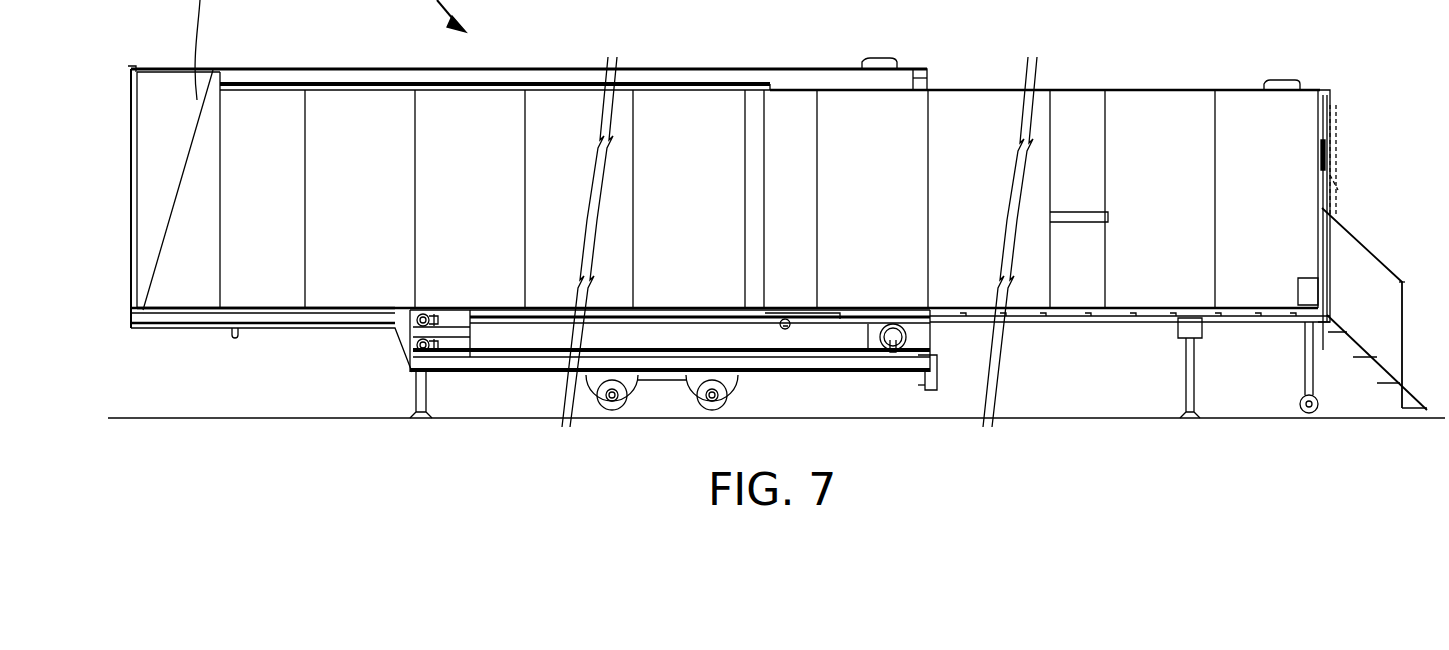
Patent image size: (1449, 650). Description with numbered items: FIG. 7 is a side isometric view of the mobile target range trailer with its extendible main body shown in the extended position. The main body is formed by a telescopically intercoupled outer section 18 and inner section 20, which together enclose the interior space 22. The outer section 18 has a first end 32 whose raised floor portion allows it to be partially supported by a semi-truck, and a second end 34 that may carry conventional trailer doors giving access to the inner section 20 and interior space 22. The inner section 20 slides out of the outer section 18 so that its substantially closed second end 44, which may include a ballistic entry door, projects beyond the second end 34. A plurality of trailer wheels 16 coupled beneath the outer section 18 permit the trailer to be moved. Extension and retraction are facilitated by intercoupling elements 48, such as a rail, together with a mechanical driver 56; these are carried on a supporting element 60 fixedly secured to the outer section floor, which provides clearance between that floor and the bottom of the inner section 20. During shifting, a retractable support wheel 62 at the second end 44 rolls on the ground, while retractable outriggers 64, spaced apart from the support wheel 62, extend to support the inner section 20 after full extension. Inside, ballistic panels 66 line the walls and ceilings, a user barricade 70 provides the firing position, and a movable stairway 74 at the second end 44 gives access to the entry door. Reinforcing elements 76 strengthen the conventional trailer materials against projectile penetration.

The trailer wheels 16 is at (633, 405).
The outer section 18 is at (525, 69).
The inner section 20 is at (1116, 90).
The interior space 22 is at (723, 108).
The first end 32 is at (131, 72).
The second end 34 is at (927, 78).
The second end 44 is at (1330, 130).
The intercoupling elements 48 is at (852, 328).
The mechanical driver 56 is at (440, 323).
The supporting element 60 is at (763, 337).
The retractable support wheel 62 is at (1300, 406).
The retractable outriggers 64 is at (425, 412).
The ballistic panels 66 is at (425, 98).
The user barricade 70 is at (1075, 210).
The movable stairway 74 is at (1343, 190).
The reinforcing elements 76 is at (137, 90).